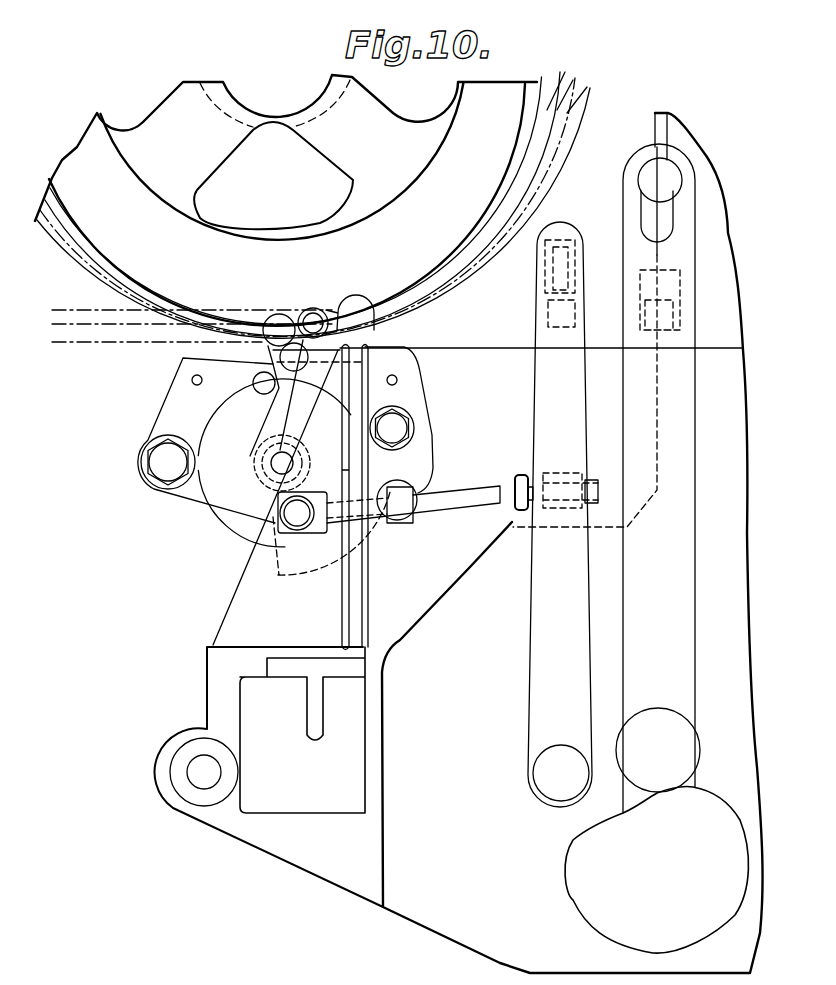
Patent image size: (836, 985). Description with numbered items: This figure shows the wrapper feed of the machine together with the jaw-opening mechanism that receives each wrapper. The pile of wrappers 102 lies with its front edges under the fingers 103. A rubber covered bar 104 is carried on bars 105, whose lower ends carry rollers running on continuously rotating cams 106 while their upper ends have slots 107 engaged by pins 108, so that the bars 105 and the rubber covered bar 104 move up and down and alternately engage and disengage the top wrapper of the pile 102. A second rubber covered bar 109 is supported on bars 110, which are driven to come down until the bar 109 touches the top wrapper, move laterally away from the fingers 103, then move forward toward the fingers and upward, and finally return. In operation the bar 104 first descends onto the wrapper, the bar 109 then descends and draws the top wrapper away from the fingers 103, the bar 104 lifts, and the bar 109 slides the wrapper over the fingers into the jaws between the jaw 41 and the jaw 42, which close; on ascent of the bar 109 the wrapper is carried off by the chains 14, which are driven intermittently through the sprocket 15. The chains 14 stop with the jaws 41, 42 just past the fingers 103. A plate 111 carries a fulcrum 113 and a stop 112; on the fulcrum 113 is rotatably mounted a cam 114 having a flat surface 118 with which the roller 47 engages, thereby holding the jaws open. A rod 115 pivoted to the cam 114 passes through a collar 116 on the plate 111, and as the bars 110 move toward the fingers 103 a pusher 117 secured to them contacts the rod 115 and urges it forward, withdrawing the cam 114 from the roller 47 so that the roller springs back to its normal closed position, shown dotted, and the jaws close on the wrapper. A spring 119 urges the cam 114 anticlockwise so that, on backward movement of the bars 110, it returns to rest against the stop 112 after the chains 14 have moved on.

The chains 14 is at (547, 137).
The sprocket 15 is at (497, 100).
The jaw 41 is at (315, 317).
The jaw 42 is at (366, 325).
The roller 47 is at (266, 322).
The pile of wrappers 102 is at (600, 400).
The fingers 103 is at (380, 350).
The rubber covered bar 104 is at (647, 270).
The bars 105 is at (645, 612).
The cams 106 is at (578, 845).
The slots 107 is at (667, 220).
The pins 108 is at (663, 163).
The second rubber covered bar 109 is at (543, 308).
The bars 110 is at (543, 395).
The plate 111 is at (208, 545).
The stop 112 is at (277, 355).
The fulcrum 113 is at (173, 390).
The cam 114 is at (232, 527).
The rod 115 is at (457, 503).
The collar 116 is at (402, 522).
The pusher 117 is at (518, 513).
The flat surface 118 is at (262, 500).
The spring 119 is at (321, 552).